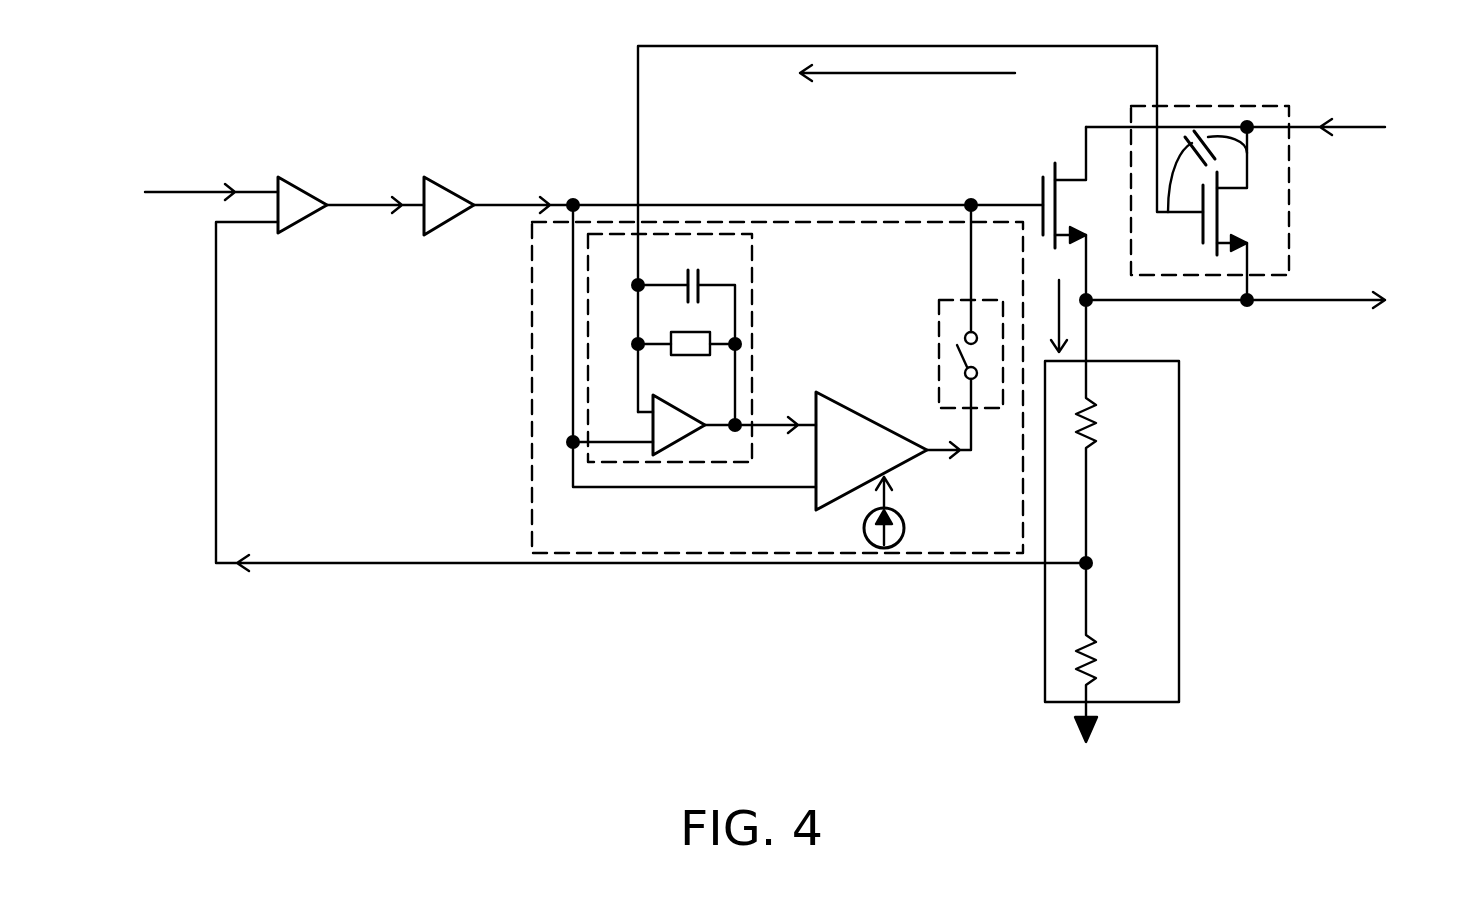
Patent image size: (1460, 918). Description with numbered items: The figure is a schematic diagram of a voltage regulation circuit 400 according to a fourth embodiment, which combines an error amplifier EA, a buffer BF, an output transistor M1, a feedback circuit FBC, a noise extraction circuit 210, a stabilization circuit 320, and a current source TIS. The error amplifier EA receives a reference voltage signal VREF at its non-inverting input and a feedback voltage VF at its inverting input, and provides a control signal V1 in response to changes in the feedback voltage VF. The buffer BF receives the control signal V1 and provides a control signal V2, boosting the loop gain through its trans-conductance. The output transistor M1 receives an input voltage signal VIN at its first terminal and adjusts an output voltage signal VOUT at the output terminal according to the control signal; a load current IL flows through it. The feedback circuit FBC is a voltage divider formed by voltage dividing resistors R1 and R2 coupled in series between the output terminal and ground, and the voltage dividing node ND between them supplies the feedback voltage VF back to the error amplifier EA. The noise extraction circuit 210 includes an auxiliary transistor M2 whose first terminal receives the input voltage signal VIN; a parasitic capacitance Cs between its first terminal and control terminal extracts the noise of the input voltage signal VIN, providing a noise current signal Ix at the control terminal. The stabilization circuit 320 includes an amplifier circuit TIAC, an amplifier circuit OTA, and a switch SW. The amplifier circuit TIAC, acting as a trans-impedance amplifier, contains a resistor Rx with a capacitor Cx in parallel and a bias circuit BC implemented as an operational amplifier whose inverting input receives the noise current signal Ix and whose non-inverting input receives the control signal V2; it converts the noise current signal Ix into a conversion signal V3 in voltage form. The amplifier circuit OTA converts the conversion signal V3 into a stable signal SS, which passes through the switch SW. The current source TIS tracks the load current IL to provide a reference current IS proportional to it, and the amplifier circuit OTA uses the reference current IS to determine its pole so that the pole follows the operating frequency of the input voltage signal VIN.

The reference voltage signal VREF is at (180, 191).
The error amplifier EA is at (292, 234).
The control signal V1 is at (375, 186).
The buffer BF is at (440, 236).
The control signal V2 is at (527, 186).
The stabilization circuit 320 is at (771, 222).
The amplifier circuit TIAC is at (752, 250).
The noise current signal Ix is at (920, 229).
The capacitor Cx is at (683, 328).
The resistor Rx is at (686, 364).
The bias circuit BC is at (668, 456).
The conversion signal V3 is at (760, 409).
The amplifier circuit OTA is at (852, 406).
The stable signal SS is at (951, 437).
The switch SW is at (938, 340).
The current source TIS is at (905, 526).
The reference current IS is at (895, 487).
The output transistor M1 is at (1074, 213).
The noise extraction circuit 210 is at (1240, 104).
The auxiliary transistor M2 is at (1235, 213).
The parasitic capacitance Cs is at (1202, 166).
The input voltage signal VIN is at (1259, 125).
The output voltage signal VOUT is at (1265, 298).
The load current IL is at (1050, 316).
The feedback circuit FBC is at (1179, 386).
The voltage dividing resistor R1 is at (1107, 431).
The voltage dividing node ND is at (1096, 562).
The voltage dividing resistor R2 is at (1107, 652).
The feedback voltage VF is at (651, 396).
The voltage regulation circuit 400 is at (1275, 791).